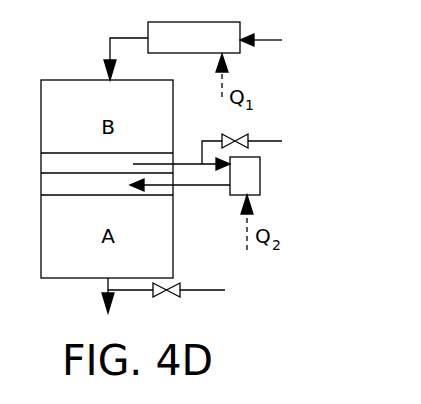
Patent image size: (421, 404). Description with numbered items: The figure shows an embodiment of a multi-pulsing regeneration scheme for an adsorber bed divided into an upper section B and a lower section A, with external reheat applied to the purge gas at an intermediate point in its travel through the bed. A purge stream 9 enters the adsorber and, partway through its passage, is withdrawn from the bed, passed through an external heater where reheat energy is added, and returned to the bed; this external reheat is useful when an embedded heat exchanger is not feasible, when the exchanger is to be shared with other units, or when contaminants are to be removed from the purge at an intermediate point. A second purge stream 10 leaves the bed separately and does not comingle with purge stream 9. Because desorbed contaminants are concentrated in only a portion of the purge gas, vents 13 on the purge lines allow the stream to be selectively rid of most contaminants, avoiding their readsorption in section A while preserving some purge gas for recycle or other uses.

The purge stream 9 is at (207, 92).
The purge stream 10 is at (147, 247).
The vents 13 is at (195, 218).